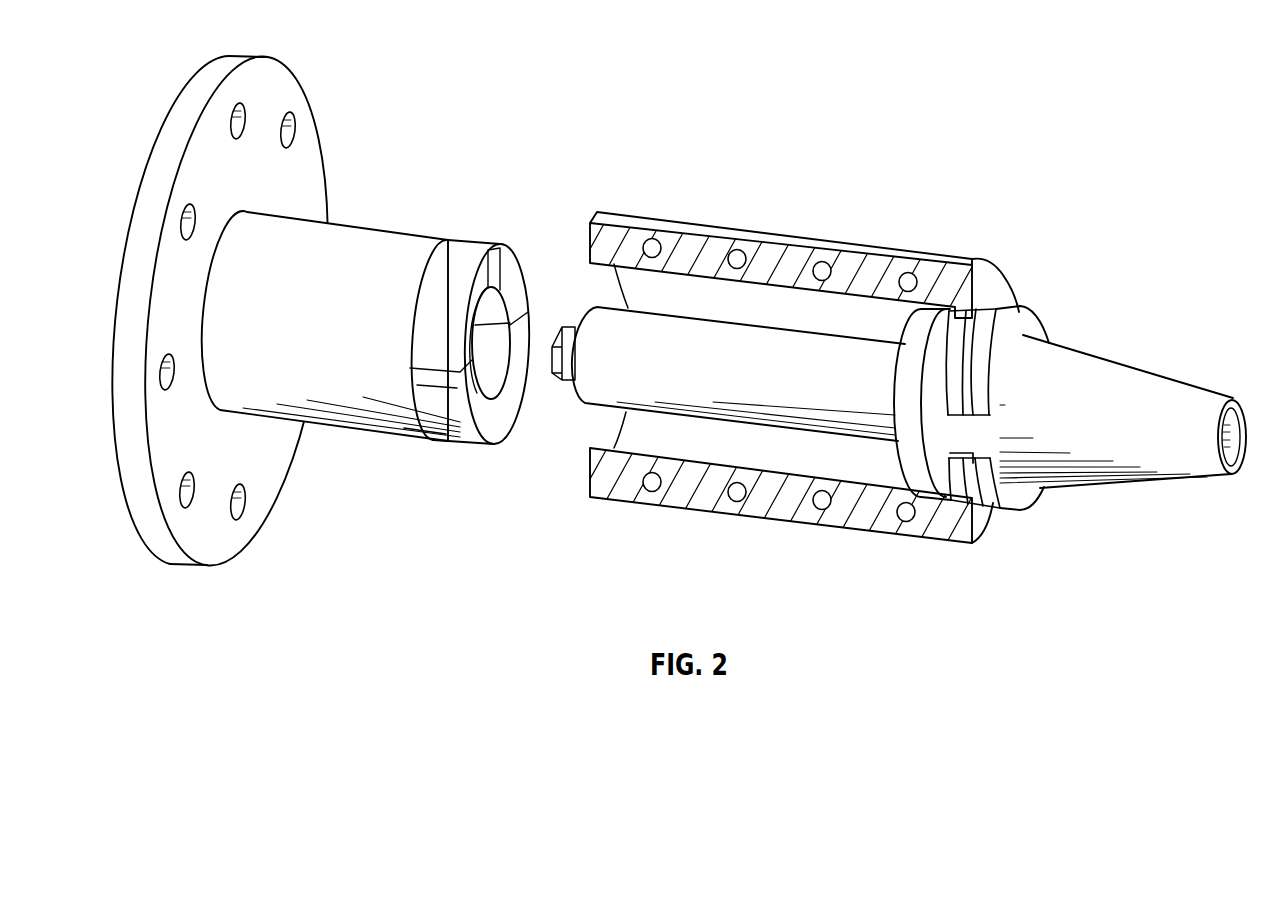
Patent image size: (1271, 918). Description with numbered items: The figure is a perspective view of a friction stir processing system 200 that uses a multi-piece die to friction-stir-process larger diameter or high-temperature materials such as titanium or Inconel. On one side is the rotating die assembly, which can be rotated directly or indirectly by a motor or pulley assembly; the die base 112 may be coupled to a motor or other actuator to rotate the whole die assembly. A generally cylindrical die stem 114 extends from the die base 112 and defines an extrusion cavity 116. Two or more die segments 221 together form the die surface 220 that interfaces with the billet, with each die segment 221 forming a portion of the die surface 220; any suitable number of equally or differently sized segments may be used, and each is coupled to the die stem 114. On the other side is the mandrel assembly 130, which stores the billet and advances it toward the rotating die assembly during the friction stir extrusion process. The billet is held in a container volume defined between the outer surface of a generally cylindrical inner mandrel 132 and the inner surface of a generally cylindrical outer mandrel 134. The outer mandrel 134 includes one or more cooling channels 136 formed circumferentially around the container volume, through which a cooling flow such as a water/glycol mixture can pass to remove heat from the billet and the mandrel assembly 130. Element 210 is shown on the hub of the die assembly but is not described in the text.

The friction stir processing system 200 is at (1170, 156).
The die base 112 is at (278, 74).
The hub 210 is at (352, 424).
The die surface 220 is at (496, 334).
The die segments 221 is at (490, 262).
The extrusion cavity 116 is at (499, 310).
The die stem 114 is at (405, 428).
The mandrel assembly 130 is at (895, 391).
The outer mandrel 134 is at (792, 361).
The cooling channels 136 is at (640, 242).
The inner mandrel 132 is at (837, 353).